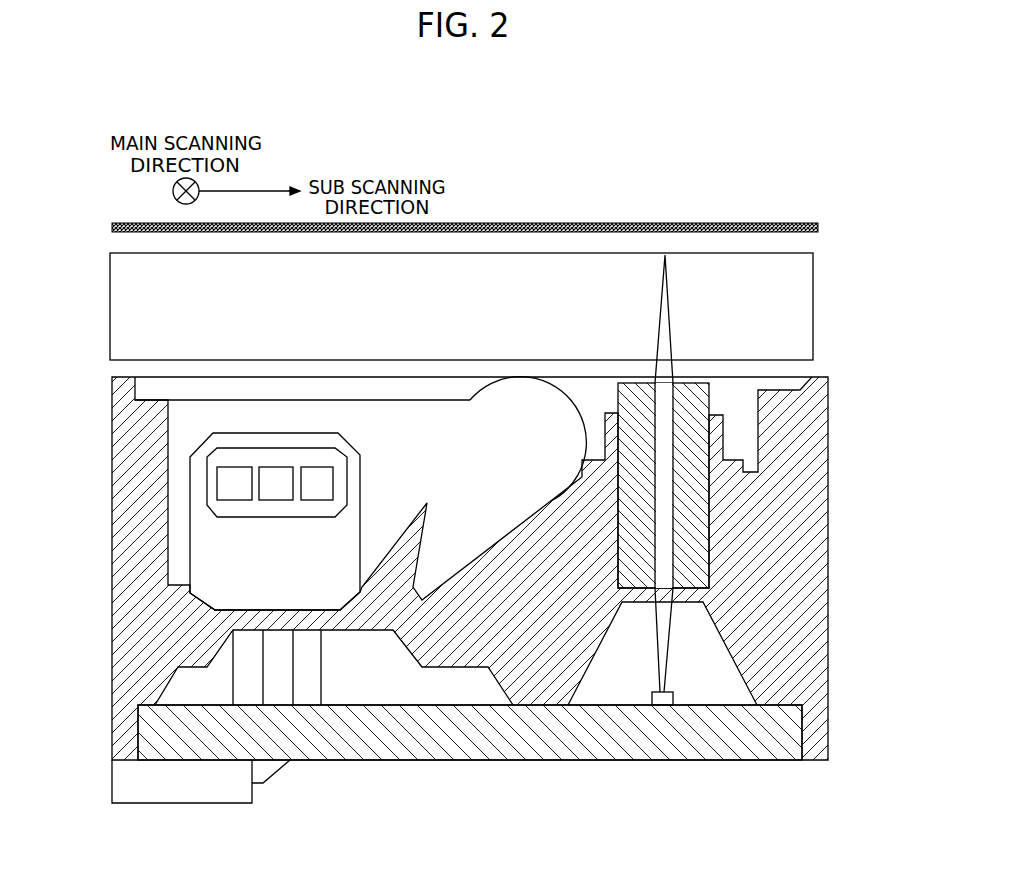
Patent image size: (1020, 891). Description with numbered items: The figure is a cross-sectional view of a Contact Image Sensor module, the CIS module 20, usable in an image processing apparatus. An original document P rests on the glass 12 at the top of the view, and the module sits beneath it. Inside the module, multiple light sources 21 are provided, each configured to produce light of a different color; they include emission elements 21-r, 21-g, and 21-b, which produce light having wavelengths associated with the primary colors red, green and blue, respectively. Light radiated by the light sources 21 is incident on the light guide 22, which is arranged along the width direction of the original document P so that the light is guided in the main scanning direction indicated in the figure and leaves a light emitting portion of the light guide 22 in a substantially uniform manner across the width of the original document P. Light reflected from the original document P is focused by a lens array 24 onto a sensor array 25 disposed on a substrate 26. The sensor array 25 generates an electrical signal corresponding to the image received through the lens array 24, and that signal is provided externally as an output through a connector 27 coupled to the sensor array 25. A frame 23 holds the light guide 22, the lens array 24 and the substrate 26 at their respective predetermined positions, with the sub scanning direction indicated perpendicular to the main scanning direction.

The CIS module 20 is at (337, 135).
The original document P is at (818, 228).
The glass 12 is at (800, 302).
The light sources 21 is at (333, 587).
The emission element 21-r is at (228, 480).
The emission element 21-g is at (275, 490).
The emission element 21-b is at (317, 492).
The light guide 22 is at (183, 428).
The frame 23 is at (820, 558).
The lens array 24 is at (697, 445).
The sensor array 25 is at (662, 705).
The substrate 26 is at (480, 747).
The connector 27 is at (177, 790).